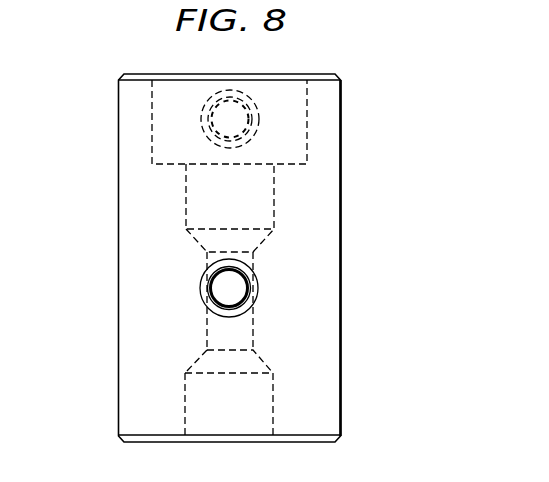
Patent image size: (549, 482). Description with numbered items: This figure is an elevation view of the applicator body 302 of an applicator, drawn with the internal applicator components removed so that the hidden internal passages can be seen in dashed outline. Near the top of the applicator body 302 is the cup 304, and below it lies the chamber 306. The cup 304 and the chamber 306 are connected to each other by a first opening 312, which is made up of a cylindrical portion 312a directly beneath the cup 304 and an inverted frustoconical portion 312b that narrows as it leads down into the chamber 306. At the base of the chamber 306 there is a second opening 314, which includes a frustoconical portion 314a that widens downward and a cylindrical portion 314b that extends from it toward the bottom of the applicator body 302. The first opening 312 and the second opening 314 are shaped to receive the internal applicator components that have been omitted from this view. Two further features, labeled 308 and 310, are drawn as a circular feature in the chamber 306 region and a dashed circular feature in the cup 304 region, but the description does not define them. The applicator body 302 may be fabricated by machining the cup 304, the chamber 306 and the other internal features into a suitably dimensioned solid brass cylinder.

The applicator body 302 is at (342, 252).
The cup 304 is at (308, 127).
The chamber 306 is at (250, 322).
The bore opening 308 is at (200, 288).
The hidden bore 310 is at (253, 107).
The first opening 312 is at (236, 225).
The cylindrical portion 312a is at (274, 182).
The inverted frustoconical portion 312b is at (260, 242).
The second opening 314 is at (240, 380).
The frustoconical portion 314a is at (260, 362).
The cylindrical portion 314b is at (273, 417).